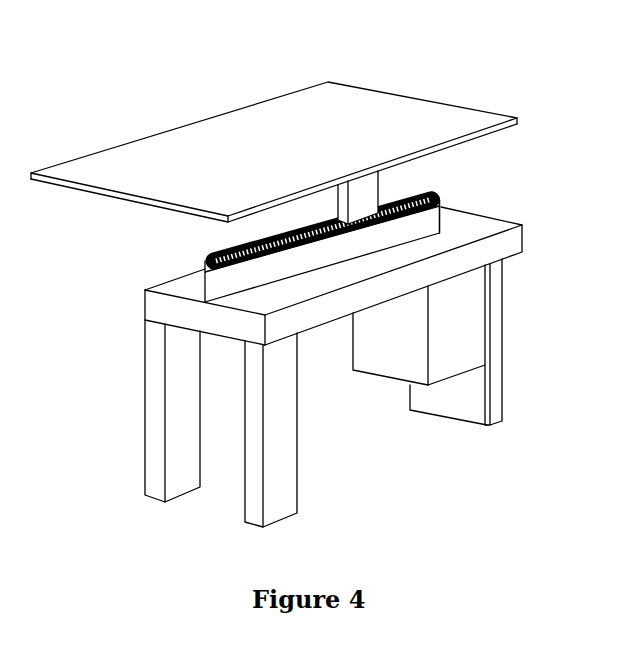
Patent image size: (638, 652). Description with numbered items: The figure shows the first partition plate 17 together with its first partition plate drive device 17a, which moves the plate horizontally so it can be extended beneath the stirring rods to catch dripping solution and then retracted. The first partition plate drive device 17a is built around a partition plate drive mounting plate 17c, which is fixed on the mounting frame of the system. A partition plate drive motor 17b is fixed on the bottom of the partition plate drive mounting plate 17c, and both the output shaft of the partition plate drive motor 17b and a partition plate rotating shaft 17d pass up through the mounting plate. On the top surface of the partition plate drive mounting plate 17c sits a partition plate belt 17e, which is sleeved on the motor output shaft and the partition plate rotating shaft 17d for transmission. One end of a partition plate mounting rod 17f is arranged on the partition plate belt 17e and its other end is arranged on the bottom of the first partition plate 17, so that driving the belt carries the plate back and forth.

The first partition plate 17 is at (330, 97).
The first partition plate drive device 17a is at (527, 235).
The partition plate drive motor 17b is at (448, 357).
The partition plate drive mounting plate 17c is at (203, 320).
The partition plate rotating shaft 17d is at (210, 263).
The partition plate belt 17e is at (443, 208).
The partition plate mounting rod 17f is at (373, 197).